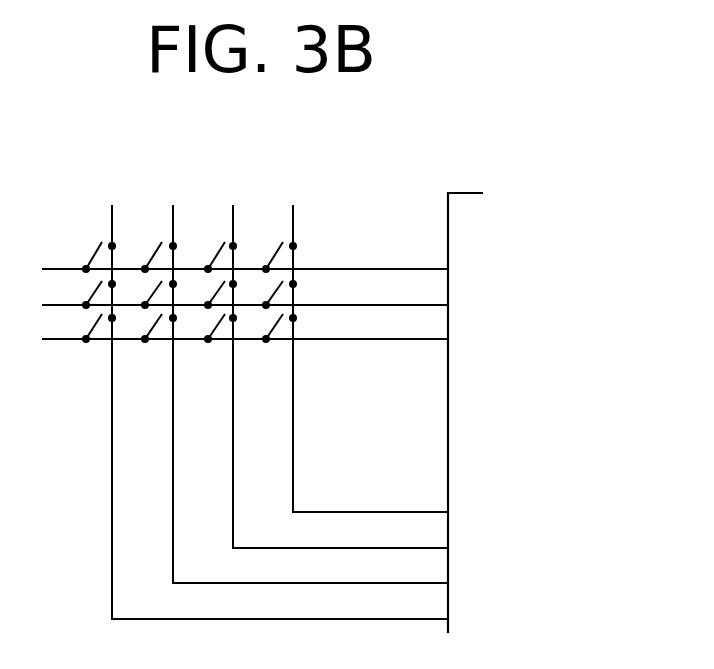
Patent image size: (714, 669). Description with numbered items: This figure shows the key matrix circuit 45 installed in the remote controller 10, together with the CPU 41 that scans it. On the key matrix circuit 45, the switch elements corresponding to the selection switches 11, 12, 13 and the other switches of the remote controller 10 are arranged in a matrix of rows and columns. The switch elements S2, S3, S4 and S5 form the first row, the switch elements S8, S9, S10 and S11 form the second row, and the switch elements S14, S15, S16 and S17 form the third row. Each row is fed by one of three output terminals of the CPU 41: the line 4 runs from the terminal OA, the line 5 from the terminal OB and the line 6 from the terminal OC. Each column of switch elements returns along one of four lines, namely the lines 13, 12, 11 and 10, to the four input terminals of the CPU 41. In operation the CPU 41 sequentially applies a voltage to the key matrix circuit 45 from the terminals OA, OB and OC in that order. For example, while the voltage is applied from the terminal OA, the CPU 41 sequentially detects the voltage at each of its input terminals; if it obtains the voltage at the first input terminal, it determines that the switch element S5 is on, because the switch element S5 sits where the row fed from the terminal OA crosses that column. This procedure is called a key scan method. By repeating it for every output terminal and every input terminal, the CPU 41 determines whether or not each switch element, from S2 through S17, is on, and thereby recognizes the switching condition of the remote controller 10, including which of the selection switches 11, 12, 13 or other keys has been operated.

The key matrix circuit 45 is at (172, 198).
The CPU 41 is at (472, 474).
The output line OA 4 is at (245, 258).
The output line OB 5 is at (245, 294).
The output line OC 6 is at (245, 328).
The remote controller 10 is at (280, 607).
The selection switch 11 is at (310, 571).
The selection switch 12 is at (340, 536).
The selection switch 13 is at (370, 500).
The switch element S2 is at (83, 247).
The switch element S3 is at (140, 247).
The switch element S4 is at (203, 247).
The switch element S5 is at (261, 247).
The switch element S8 is at (83, 292).
The switch element S9 is at (142, 292).
The switch element S10 is at (201, 292).
The switch element S11 is at (261, 292).
The switch element S14 is at (82, 326).
The switch element S15 is at (142, 326).
The switch element S16 is at (201, 326).
The switch element S17 is at (261, 326).